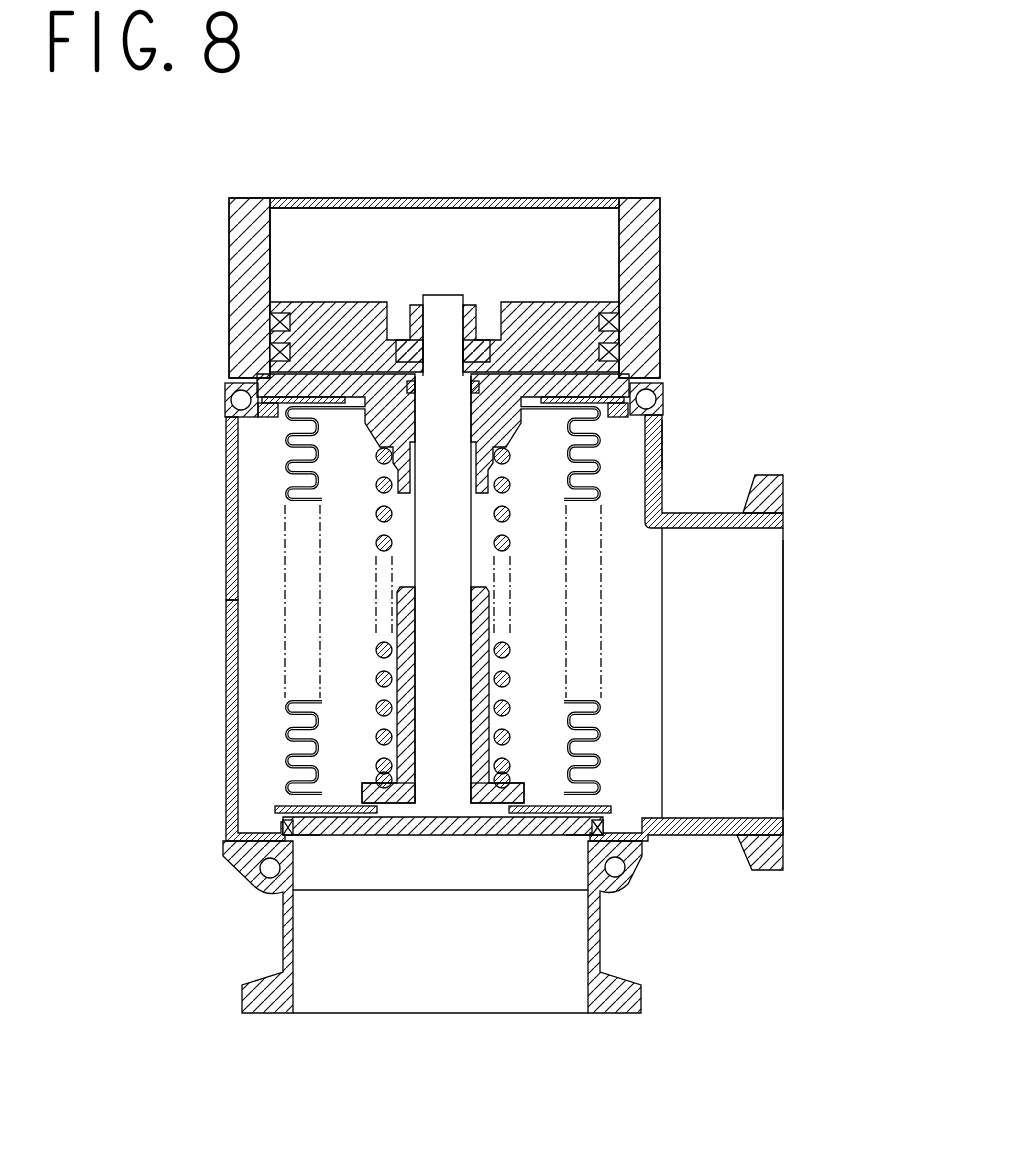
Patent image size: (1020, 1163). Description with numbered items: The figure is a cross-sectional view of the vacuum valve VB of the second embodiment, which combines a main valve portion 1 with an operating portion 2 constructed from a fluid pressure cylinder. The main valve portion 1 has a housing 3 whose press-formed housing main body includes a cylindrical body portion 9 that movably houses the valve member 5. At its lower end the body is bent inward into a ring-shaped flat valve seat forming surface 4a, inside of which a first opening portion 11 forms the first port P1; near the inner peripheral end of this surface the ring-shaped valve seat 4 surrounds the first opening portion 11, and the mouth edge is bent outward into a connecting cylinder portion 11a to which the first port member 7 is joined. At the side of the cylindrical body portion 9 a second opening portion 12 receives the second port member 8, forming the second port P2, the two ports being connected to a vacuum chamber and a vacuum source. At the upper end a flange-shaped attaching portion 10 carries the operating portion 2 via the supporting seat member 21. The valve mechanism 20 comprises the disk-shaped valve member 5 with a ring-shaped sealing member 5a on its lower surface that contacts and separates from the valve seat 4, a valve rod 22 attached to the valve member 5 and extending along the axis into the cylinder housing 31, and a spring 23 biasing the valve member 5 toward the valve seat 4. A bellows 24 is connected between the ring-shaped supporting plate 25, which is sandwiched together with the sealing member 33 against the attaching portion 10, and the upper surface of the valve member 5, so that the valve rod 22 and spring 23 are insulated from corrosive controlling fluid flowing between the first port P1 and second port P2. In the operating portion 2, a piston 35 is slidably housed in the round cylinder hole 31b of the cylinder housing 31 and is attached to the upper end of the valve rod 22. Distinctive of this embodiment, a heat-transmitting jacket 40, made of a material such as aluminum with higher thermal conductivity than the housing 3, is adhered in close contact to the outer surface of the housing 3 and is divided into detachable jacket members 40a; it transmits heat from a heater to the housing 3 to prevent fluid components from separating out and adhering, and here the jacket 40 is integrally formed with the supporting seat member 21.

The main valve portion 1 is at (475, 593).
The operating portion 2 is at (442, 269).
The housing 3 is at (442, 586).
The valve seat 4 is at (645, 815).
The valve seat forming surface 4a is at (281, 828).
The valve member 5 is at (361, 874).
The sealing member 5a is at (296, 838).
The first port member 7 is at (414, 973).
The second port member 8 is at (764, 684).
The cylindrical body portion 9 is at (232, 712).
The attaching portion 10 is at (663, 432).
The first opening portion 11 is at (414, 927).
The connecting cylinder portion 11a is at (268, 888).
The second opening portion 12 is at (661, 822).
The valve mechanism 20 is at (507, 850).
The supporting seat member 21 is at (663, 383).
The valve rod 22 is at (437, 566).
The spring 23 is at (376, 512).
The bellows 24 is at (290, 742).
The supporting plate 25 is at (262, 415).
The cylinder housing 31 is at (245, 272).
The cylinder hole 31b is at (272, 255).
The sealing member 33 is at (232, 396).
The piston 35 is at (534, 306).
The jacket 40 is at (672, 458).
The jacket member 40a is at (232, 540).
The first port P1 is at (362, 1000).
The second port P2 is at (765, 706).
The vacuum valve VB is at (484, 593).